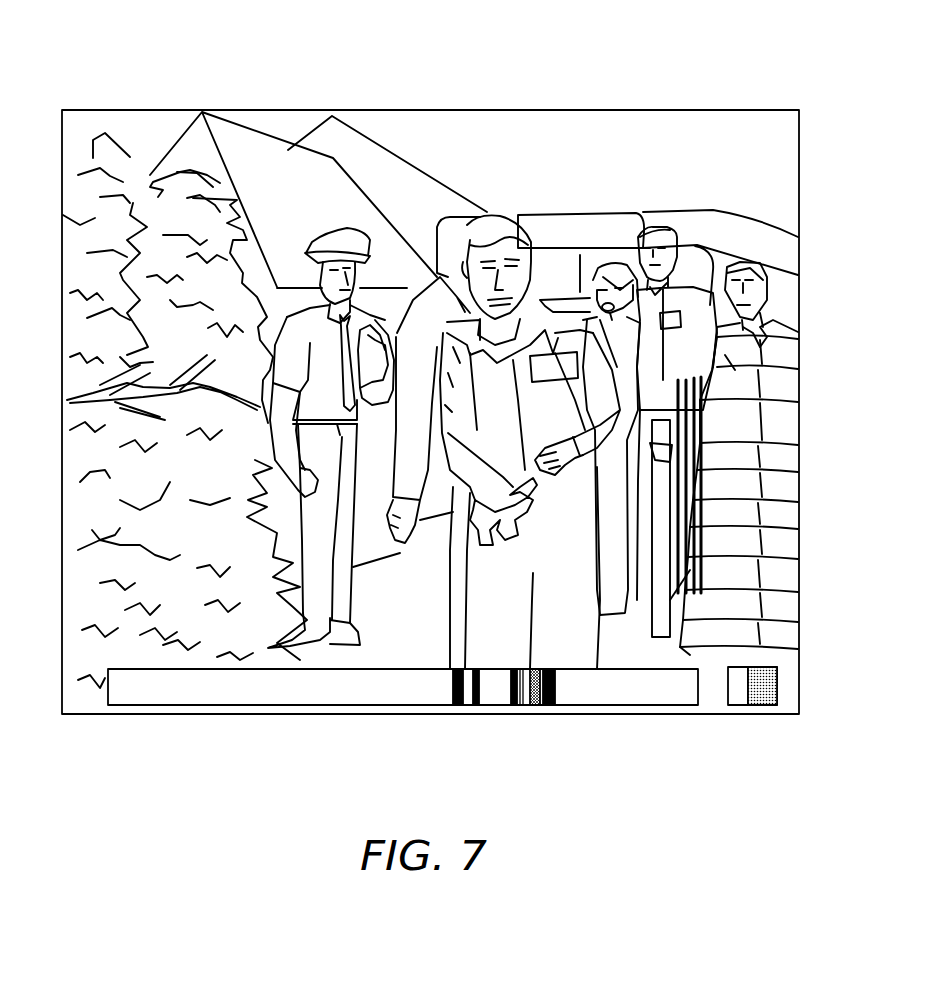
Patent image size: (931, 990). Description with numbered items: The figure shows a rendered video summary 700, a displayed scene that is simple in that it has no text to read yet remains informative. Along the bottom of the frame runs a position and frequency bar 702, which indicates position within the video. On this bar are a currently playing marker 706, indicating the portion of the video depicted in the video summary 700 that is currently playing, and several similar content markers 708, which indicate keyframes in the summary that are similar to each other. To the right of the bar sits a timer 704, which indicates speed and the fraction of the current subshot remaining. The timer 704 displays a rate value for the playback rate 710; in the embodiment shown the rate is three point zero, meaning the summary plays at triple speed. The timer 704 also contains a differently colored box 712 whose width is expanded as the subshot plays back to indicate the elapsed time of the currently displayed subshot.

The rendered video summary 700 is at (370, 86).
The position and frequency bar 702 is at (165, 705).
The timer 704 is at (738, 706).
The currently playing marker 706 is at (534, 706).
The similar content markers 708 is at (508, 706).
The playback rate 710 is at (728, 698).
The differently colored box 712 is at (742, 668).